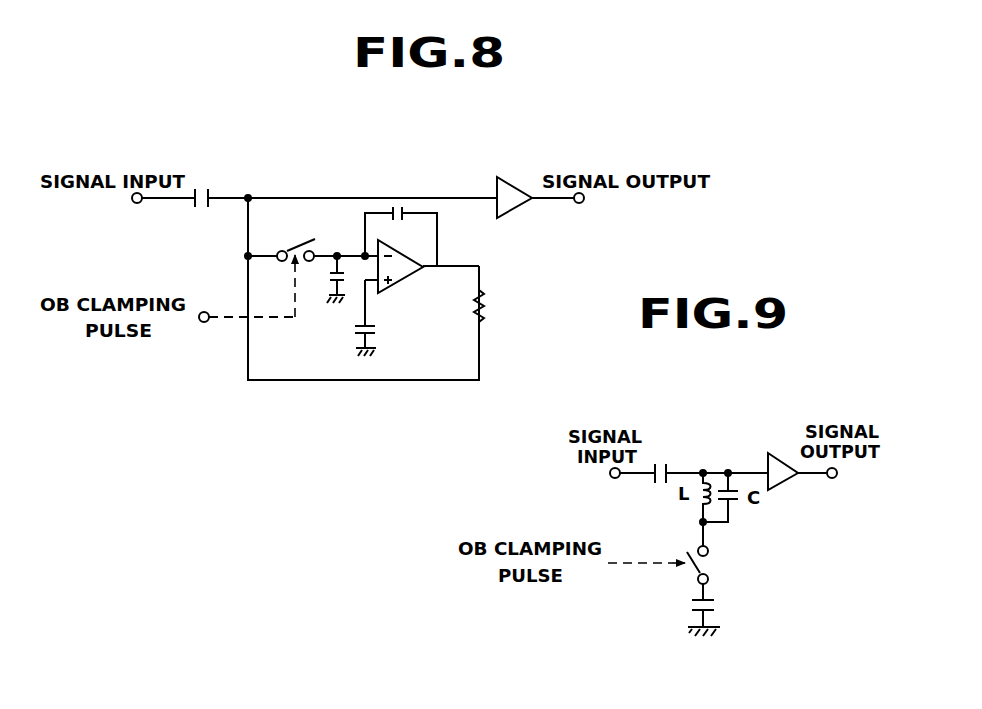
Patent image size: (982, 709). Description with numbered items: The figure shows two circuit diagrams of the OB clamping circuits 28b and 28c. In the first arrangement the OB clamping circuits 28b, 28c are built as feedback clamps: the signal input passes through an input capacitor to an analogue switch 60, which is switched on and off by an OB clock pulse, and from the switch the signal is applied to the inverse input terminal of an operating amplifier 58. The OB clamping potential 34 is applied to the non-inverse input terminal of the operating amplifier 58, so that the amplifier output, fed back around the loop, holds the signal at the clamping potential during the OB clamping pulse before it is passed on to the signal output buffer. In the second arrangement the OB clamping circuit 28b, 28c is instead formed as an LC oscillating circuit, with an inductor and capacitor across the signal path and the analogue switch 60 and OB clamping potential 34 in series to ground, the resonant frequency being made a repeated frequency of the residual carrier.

In FIG. 8, the OB clamping circuit 28b is at (364, 339).
In FIG. 9, the OB clamping circuit 28b is at (677, 576).
In FIG. 8, the OB clamping circuit 28c is at (340, 405).
In FIG. 9, the OB clamping circuit 28c is at (636, 607).
In FIG. 8, the OB clamping potential 34 is at (358, 316).
In FIG. 9, the OB clamping potential 34 is at (713, 602).
In FIG. 8, the operating amplifier 58 is at (412, 272).
In FIG. 8, the analogue switch 60 is at (298, 237).
In FIG. 9, the analogue switch 60 is at (707, 560).